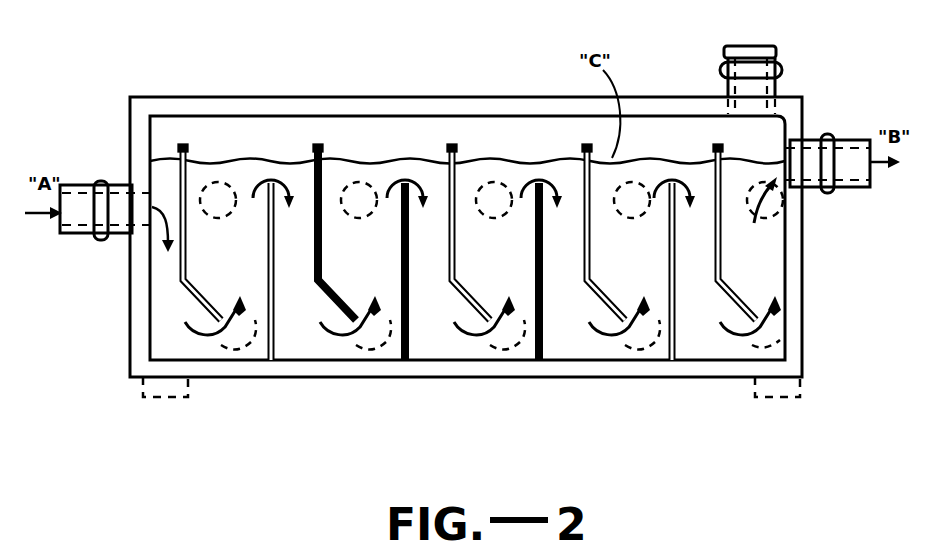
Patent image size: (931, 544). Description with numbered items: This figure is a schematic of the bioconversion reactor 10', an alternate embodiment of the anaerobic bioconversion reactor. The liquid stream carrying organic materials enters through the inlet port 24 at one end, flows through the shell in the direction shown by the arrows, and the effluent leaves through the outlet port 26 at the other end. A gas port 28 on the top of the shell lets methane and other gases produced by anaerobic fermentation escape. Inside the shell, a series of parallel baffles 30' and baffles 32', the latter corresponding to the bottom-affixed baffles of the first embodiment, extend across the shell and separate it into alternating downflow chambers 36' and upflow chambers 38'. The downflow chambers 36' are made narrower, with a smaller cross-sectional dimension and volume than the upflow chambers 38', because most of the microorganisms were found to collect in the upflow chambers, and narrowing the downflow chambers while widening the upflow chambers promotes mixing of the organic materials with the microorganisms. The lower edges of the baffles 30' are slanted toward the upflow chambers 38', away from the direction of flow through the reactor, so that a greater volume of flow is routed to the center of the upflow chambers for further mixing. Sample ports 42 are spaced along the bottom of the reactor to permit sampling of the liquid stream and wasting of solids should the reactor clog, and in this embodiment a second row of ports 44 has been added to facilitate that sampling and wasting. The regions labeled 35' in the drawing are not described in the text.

The bioconversion reactor 10' is at (466, 218).
The inlet port 24 is at (74, 190).
The outlet port 26 is at (856, 150).
The gas port 28 is at (776, 55).
The baffles 30' is at (467, 191).
The baffle plates 32' is at (507, 297).
The chamber 35' is at (500, 261).
The downflow chambers 36' is at (368, 261).
The upflow chambers 38' is at (492, 261).
The sample ports 42 is at (245, 357).
The second row of ports 44 is at (224, 186).